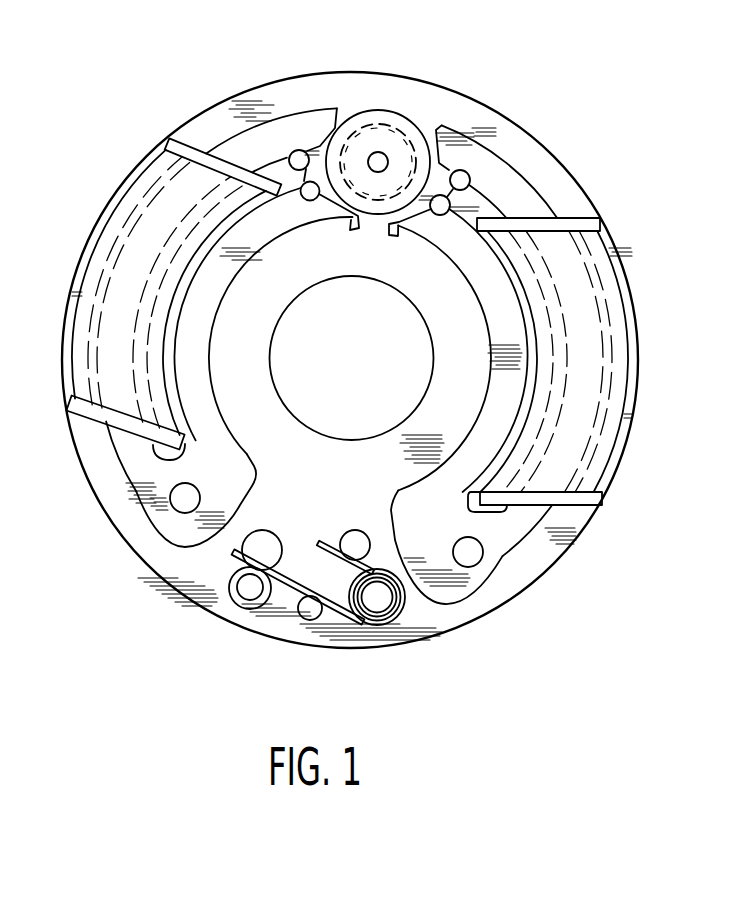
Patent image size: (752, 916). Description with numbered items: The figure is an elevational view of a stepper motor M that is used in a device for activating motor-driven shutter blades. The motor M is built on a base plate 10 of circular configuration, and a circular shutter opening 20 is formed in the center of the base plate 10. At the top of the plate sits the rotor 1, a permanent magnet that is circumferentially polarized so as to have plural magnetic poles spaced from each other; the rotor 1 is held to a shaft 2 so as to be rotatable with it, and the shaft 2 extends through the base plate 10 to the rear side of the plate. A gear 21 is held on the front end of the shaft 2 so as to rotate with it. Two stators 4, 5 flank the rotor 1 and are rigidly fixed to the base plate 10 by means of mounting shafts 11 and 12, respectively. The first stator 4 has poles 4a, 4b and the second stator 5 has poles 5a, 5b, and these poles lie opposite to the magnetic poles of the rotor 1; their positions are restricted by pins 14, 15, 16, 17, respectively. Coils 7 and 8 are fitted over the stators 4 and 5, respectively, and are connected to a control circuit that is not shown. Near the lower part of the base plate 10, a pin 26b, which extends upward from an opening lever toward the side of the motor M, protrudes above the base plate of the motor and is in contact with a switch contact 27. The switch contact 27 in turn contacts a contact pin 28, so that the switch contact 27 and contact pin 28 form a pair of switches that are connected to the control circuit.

The stepper motor M is at (166, 103).
The rotor 1 is at (398, 104).
The shaft 2 is at (378, 160).
The gear 21 is at (416, 128).
The stator 4 is at (128, 462).
The pole 4a is at (330, 128).
The pole 4b is at (354, 226).
The stator 5 is at (518, 537).
The pole 5a is at (477, 142).
The pole 5b is at (392, 234).
The coil 7 is at (143, 185).
The coil 8 is at (618, 312).
The base plate 10 is at (178, 583).
The mounting shaft 11 is at (196, 494).
The mounting shaft 12 is at (459, 549).
The pin 14 is at (298, 151).
The pin 15 is at (307, 200).
The pin 16 is at (470, 179).
The pin 17 is at (439, 215).
The shutter opening 20 is at (268, 357).
The pin 26b is at (247, 592).
The switch contact 27 is at (296, 592).
The contact pin 28 is at (311, 620).